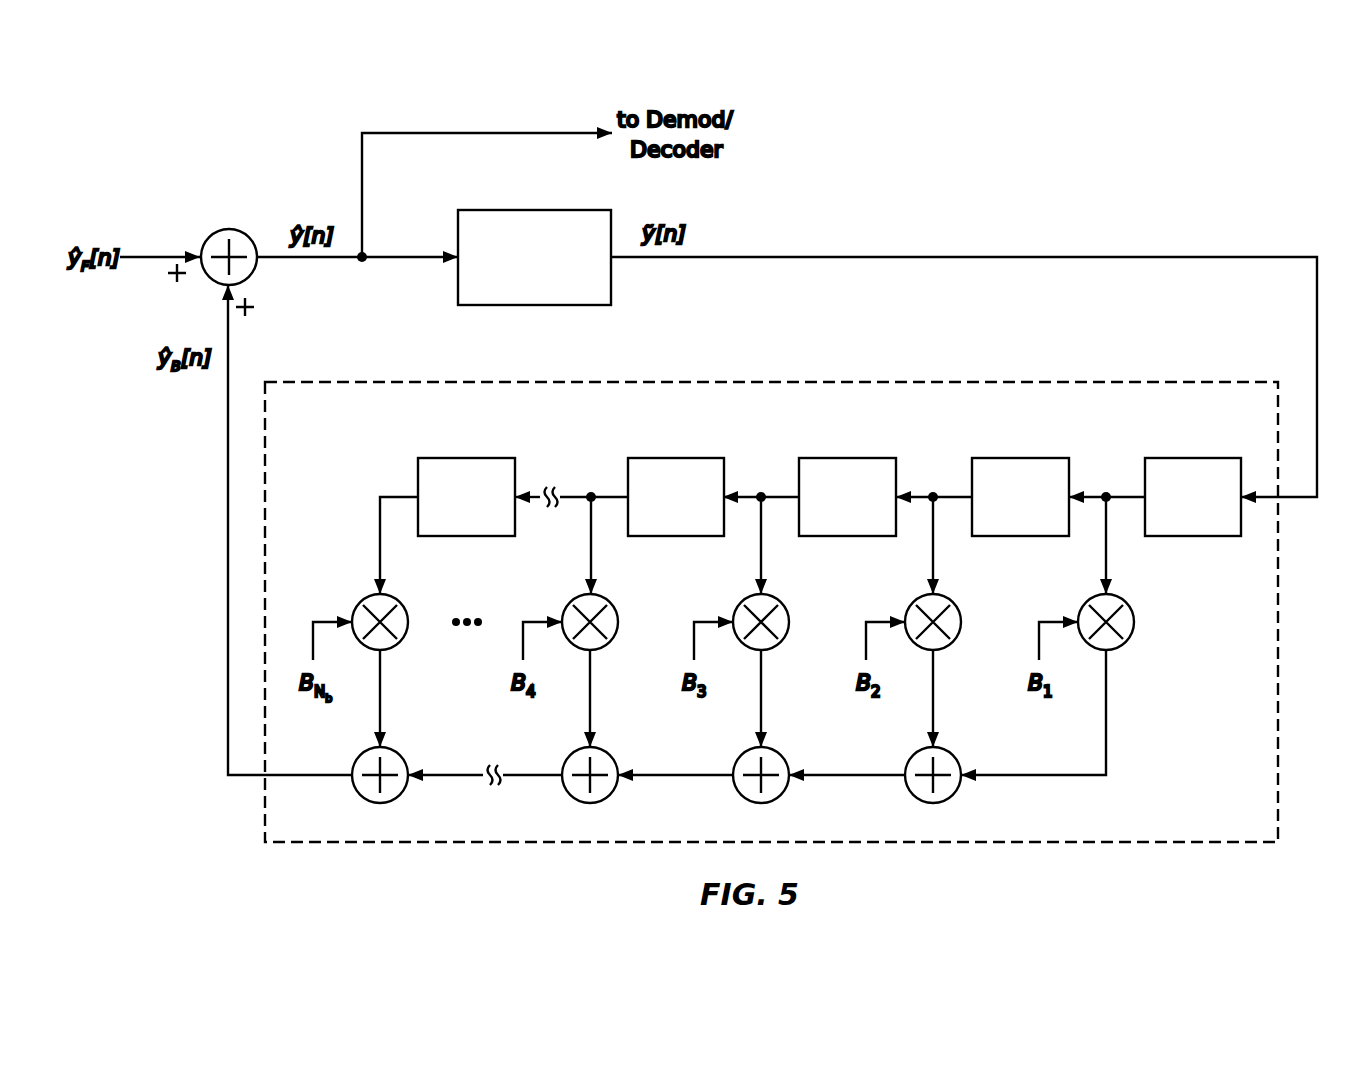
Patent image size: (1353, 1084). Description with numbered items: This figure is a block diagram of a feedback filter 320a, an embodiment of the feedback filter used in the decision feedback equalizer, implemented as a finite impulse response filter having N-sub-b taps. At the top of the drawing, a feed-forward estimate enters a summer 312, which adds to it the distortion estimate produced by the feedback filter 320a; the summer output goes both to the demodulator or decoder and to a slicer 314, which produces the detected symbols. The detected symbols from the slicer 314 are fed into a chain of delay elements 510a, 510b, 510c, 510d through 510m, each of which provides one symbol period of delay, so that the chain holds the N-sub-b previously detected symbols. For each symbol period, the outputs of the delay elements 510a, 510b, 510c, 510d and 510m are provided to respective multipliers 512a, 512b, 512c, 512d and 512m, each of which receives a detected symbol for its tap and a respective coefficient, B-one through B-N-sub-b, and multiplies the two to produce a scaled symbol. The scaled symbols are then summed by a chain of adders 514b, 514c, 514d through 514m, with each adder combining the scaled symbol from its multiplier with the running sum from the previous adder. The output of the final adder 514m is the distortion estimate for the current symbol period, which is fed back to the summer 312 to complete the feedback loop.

The summer 312 is at (224, 230).
The slicer 314 is at (527, 210).
The feedback filter 320a is at (753, 382).
The delay element 510a is at (1188, 458).
The delay element 510b is at (1017, 458).
The delay element 510c is at (843, 458).
The delay element 510d is at (672, 458).
The delay element 510m is at (474, 441).
The multiplier 512a is at (1123, 600).
The multiplier 512b is at (950, 600).
The multiplier 512c is at (778, 600).
The multiplier 512d is at (607, 600).
The multiplier 512m is at (397, 600).
The adder 514b is at (950, 754).
The adder 514c is at (778, 754).
The adder 514d is at (607, 754).
The adder 514m is at (397, 754).